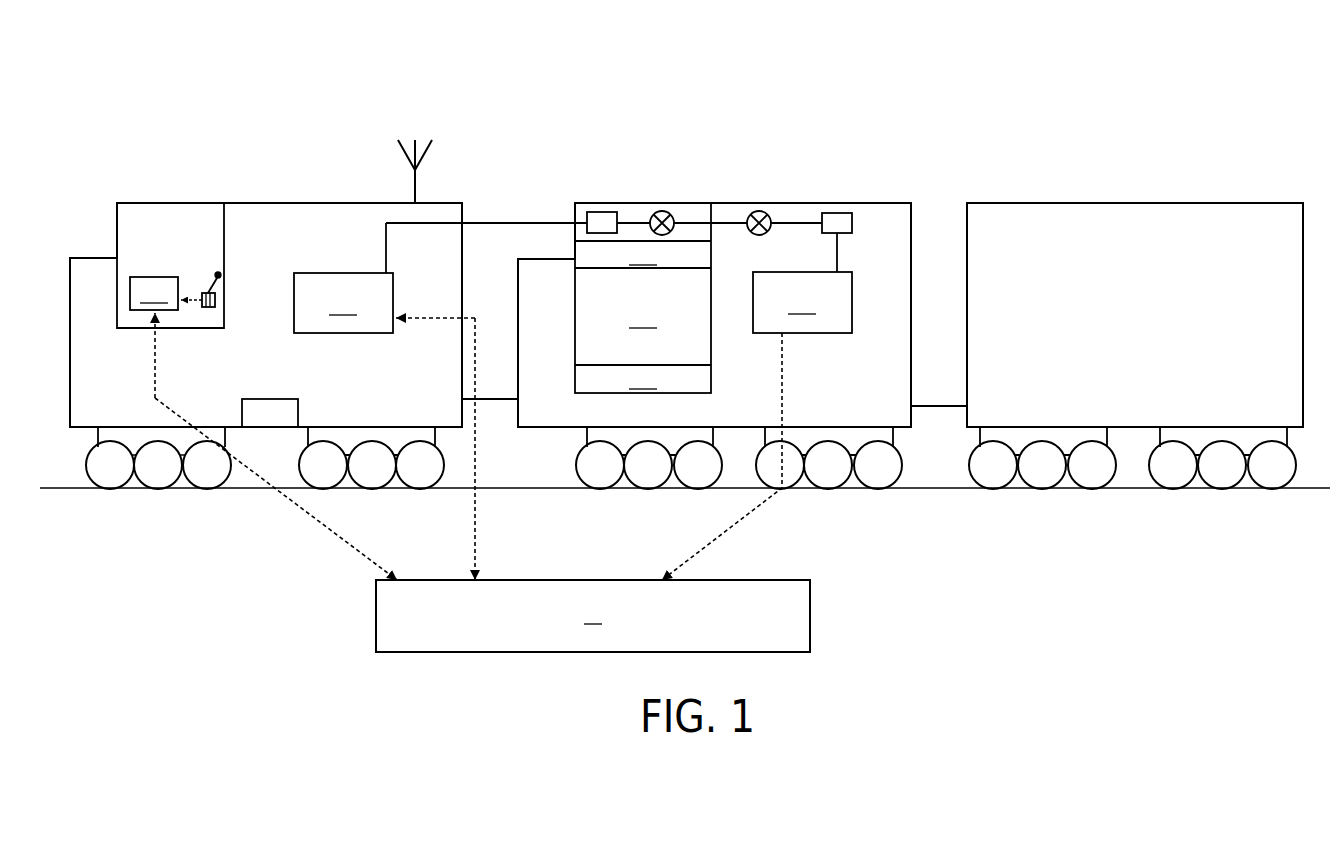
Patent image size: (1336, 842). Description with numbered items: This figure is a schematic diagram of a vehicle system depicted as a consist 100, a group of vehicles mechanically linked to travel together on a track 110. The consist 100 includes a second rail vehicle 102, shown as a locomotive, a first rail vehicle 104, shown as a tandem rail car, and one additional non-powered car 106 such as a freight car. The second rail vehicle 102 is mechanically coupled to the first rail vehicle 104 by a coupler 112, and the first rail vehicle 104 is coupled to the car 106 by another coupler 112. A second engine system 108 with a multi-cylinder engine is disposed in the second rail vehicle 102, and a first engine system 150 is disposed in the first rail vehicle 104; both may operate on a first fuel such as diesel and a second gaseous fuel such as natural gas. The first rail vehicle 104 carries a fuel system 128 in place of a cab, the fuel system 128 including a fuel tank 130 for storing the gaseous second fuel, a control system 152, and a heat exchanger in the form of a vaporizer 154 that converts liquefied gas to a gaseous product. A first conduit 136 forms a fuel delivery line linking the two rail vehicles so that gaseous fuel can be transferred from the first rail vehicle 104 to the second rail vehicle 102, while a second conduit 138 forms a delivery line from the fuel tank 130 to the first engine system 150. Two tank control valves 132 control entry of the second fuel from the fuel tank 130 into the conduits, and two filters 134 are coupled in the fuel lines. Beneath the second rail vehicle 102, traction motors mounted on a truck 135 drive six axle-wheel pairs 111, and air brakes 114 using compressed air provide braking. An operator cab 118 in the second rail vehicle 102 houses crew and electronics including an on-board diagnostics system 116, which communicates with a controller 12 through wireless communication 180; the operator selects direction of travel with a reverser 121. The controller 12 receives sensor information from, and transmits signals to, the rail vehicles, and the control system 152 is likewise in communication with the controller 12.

The consist 100 is at (1208, 107).
The second rail vehicle 102 is at (280, 203).
The first rail vehicle 104 is at (903, 203).
The car 106 is at (1262, 203).
The second engine system 108 is at (343, 278).
The track 110 is at (928, 490).
The axle-wheel pairs 111 is at (155, 477).
The coupler 112 is at (490, 403).
The air brakes 114 is at (262, 399).
The on-board diagnostics (OBD) system 116 is at (154, 293).
The operator cab 118 is at (185, 203).
The reverser 121 is at (215, 300).
The fuel system 128 is at (725, 303).
The fuel tank 130 is at (643, 298).
The tank control valves 132 is at (665, 211).
The filters 134 is at (600, 212).
The truck 135 is at (98, 440).
The first conduit 136 is at (552, 221).
The second conduit 138 is at (729, 222).
The first engine system 150 is at (802, 302).
The control system 152 is at (643, 377).
The vaporizer 154 is at (643, 254).
The wireless communication 180 is at (417, 124).
The controller 12 is at (593, 616).